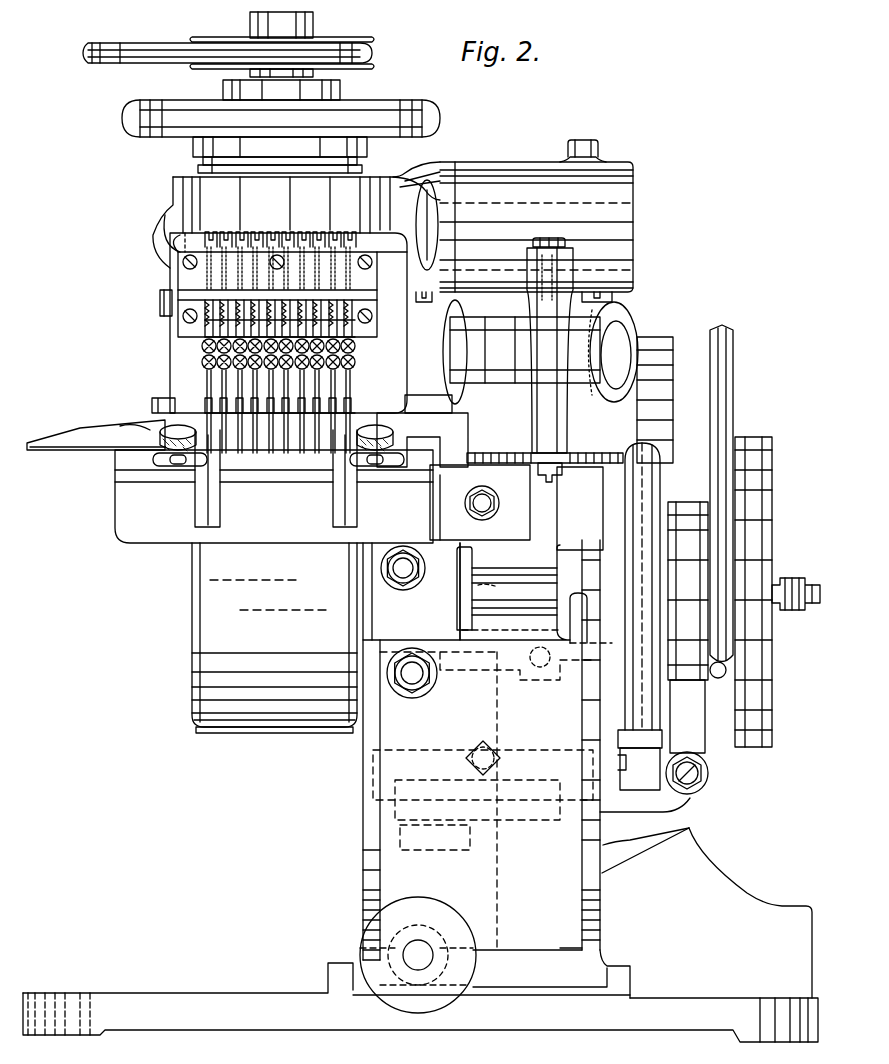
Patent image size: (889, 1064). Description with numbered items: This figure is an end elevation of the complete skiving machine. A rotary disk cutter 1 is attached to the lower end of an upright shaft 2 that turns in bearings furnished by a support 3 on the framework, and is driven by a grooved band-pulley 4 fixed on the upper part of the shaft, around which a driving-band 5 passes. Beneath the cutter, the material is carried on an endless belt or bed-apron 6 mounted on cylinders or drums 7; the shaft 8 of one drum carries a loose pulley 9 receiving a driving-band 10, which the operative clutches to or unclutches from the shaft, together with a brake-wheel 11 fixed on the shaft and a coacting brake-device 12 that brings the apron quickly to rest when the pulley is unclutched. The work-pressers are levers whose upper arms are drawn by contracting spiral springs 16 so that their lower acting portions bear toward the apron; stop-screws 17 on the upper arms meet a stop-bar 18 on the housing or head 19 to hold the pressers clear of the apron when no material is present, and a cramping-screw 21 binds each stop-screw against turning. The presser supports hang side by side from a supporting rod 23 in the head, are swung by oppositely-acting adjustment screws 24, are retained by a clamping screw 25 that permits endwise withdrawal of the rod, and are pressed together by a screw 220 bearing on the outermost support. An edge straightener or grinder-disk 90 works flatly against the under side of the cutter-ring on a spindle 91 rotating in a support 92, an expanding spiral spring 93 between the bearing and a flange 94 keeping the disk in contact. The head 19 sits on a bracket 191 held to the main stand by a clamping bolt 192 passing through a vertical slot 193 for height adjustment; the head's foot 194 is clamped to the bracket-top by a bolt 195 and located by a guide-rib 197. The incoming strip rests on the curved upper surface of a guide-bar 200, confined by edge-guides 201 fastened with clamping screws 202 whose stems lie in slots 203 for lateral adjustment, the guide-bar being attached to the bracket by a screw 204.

The rotary disk cutter 1 is at (65, 450).
The upright shaft 2 is at (275, 78).
The support 3 is at (170, 188).
The grooved band-pulley 4 is at (343, 40).
The driving-band 5 is at (105, 60).
The endless belt or bed-apron 6 is at (252, 728).
The cylinders or drums 7 is at (192, 685).
The shaft 8 is at (480, 620).
The loose pulley 9 is at (772, 560).
The driving-band 10 is at (733, 392).
The brake-wheel 11 is at (622, 503).
The brake-device 12 is at (595, 740).
The contracting spiral springs 16 is at (350, 305).
The stop-screws 17 is at (205, 365).
The stop-bar 18 is at (195, 275).
The housing or head 19 is at (175, 345).
The cramping-screw 21 is at (205, 350).
The supporting rod 23 is at (160, 302).
The adjustment screws 24 is at (229, 232).
The clamping screw 25 is at (180, 262).
The edge straightener or grinder-disk 90 is at (588, 463).
The spindle 91 is at (558, 455).
The support 92 is at (620, 328).
The expanding spiral spring 93 is at (573, 252).
The flange 94 is at (549, 238).
The bracket 191 is at (437, 468).
The clamping bolt 192 is at (385, 568).
The vertical slot 193 is at (380, 600).
The foot 194 is at (450, 455).
The bolt 195 is at (422, 440).
The guide-rib 197 is at (418, 413).
The guide-bar 200 is at (122, 543).
The edge-guides 201 is at (198, 508).
The clamping screws 202 is at (160, 432).
The slots 203 is at (155, 460).
The screw 204 is at (490, 510).
The screw 220 is at (152, 405).